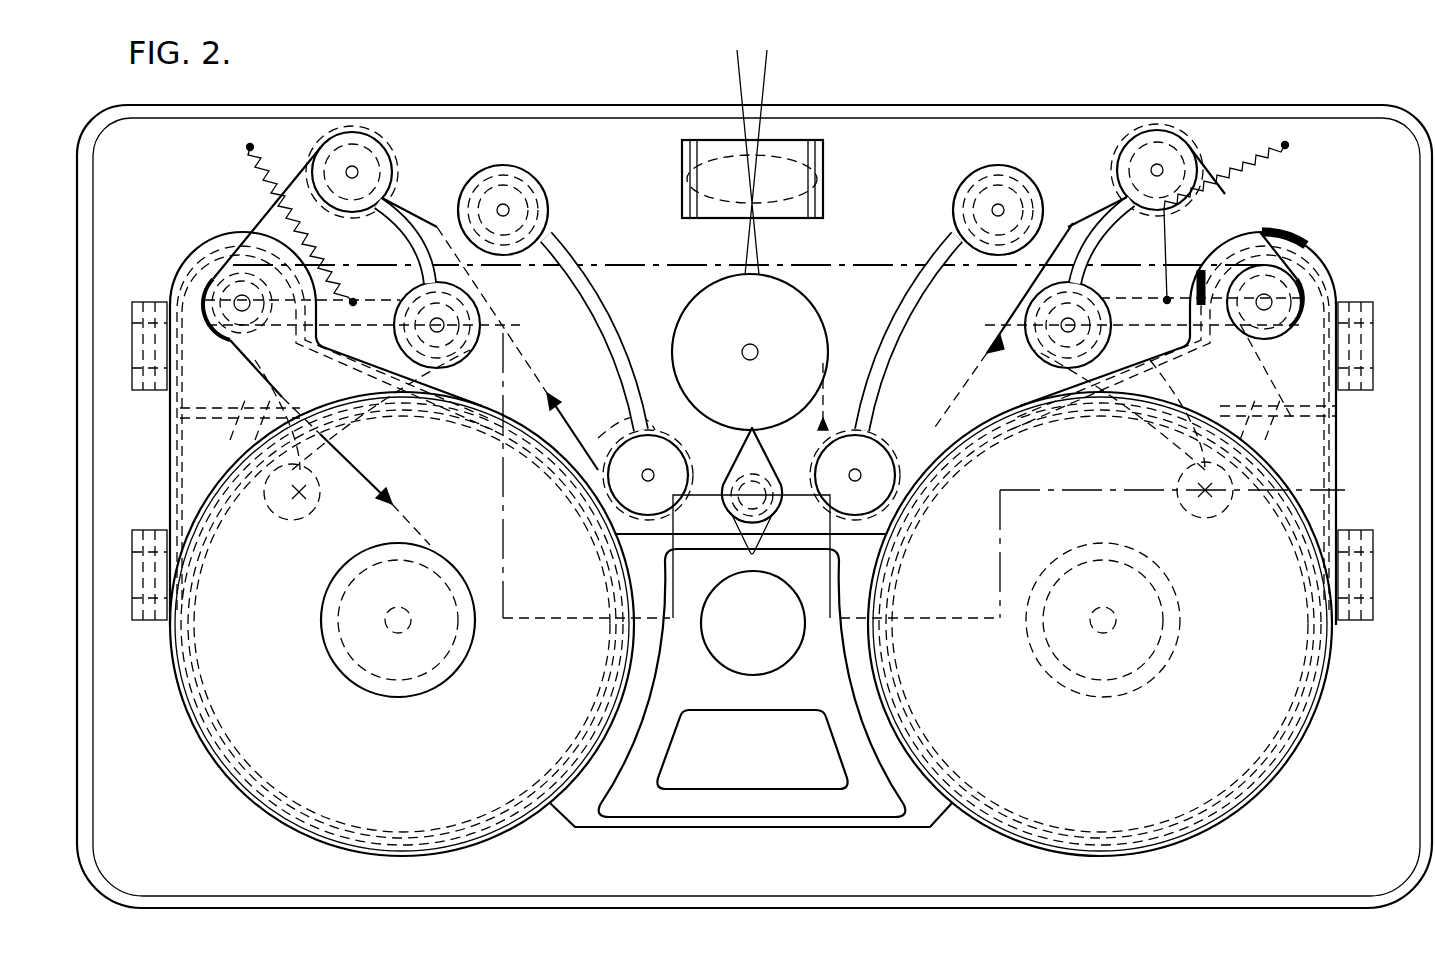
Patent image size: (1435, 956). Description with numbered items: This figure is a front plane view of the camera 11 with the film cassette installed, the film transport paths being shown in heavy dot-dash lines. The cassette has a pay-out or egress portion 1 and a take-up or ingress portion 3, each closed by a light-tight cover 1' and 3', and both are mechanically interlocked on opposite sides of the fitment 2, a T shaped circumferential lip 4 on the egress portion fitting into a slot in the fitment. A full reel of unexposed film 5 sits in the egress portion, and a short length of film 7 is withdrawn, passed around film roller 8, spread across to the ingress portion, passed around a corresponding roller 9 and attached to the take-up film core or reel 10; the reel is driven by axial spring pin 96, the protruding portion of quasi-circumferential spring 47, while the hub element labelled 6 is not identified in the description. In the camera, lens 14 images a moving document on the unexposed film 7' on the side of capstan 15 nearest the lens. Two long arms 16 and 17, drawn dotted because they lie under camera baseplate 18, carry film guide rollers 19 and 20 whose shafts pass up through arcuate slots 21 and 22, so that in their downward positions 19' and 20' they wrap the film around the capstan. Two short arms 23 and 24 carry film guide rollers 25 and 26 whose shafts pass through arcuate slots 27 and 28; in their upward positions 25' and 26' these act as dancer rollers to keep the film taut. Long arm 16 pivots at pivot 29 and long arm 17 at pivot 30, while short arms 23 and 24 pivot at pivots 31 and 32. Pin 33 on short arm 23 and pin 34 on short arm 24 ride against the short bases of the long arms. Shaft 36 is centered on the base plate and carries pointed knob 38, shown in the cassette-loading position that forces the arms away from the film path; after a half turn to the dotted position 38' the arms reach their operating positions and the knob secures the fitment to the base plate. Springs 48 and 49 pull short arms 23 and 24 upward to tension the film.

The egress portion of the film cassette 1 is at (1100, 624).
The cover of the egress portion 1' is at (1100, 624).
The fitment 2 is at (700, 829).
The ingress portion of the film cassette 3 is at (402, 624).
The cover of the ingress portion 3' is at (402, 624).
The T shaped circumferential lip 4 is at (190, 338).
The full spool or reel of unexposed film 5 is at (1318, 540).
The supply reel hub 6 is at (1160, 655).
The film 7 is at (753, 248).
The unexposed film in operating path 7' is at (637, 411).
The film roller 8 is at (1173, 428).
The roller 9 is at (331, 428).
The take-up film core or reel 10 is at (468, 628).
The camera 11 is at (895, 104).
The lens 14 is at (823, 196).
The capstan 15 is at (784, 334).
The long arm 16 is at (1015, 290).
The long arm 17 is at (497, 292).
The camera baseplate 18 is at (656, 320).
The film guide roller 19 is at (979, 210).
The downward position of film guide roller 19' is at (867, 464).
The film guide roller 20 is at (524, 210).
The downward position of film guide roller 20' is at (639, 464).
The arcuate slot 21 is at (898, 338).
The arcuate slot 22 is at (608, 338).
The short arm 23 is at (1283, 362).
The short arm 24 is at (226, 365).
The film guide roller 25 is at (1055, 338).
The upward position of film guide roller 25' is at (1178, 170).
The film guide roller 26 is at (448, 338).
The upward position of film guide roller 26' is at (376, 172).
The arcuate slot 27 is at (1102, 238).
The arcuate slot 28 is at (402, 238).
The pivot 29 is at (1218, 500).
The pivot 30 is at (284, 496).
The pivot 31 is at (1265, 301).
The pivot 32 is at (237, 303).
The pin 33 is at (1265, 432).
The pin 34 is at (240, 432).
The shaft 36 is at (770, 512).
The pointed knob 38 is at (769, 475).
The dotted position of pointed knob 38' is at (777, 551).
The quasi-circumferential spring 47 is at (372, 580).
The spring 48 is at (1262, 188).
The spring 49 is at (272, 180).
The axial spring pin 96 is at (358, 625).